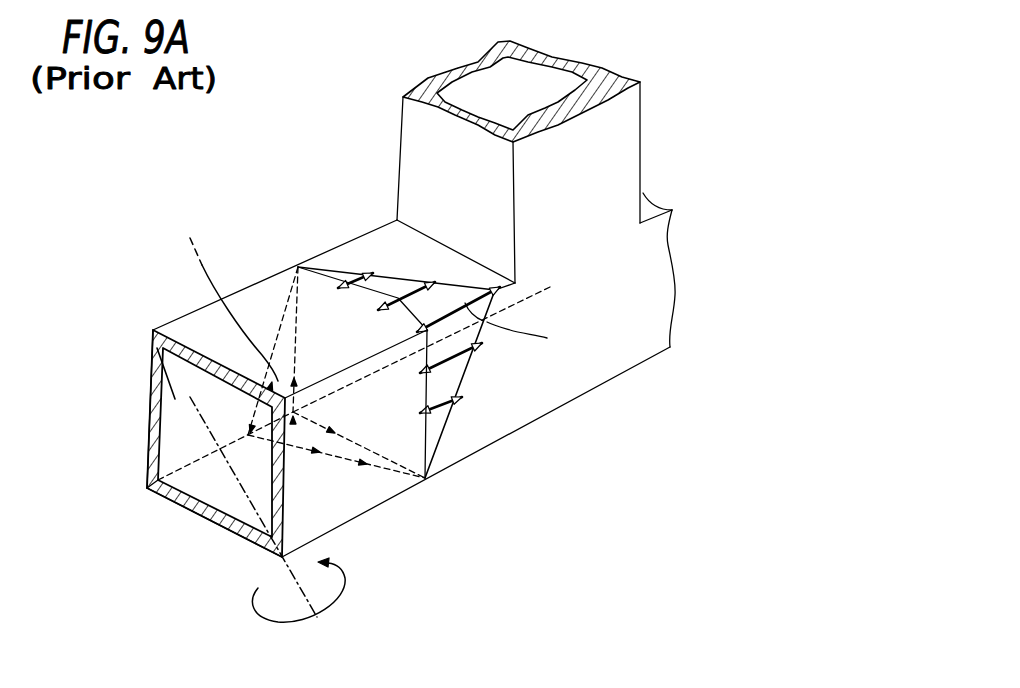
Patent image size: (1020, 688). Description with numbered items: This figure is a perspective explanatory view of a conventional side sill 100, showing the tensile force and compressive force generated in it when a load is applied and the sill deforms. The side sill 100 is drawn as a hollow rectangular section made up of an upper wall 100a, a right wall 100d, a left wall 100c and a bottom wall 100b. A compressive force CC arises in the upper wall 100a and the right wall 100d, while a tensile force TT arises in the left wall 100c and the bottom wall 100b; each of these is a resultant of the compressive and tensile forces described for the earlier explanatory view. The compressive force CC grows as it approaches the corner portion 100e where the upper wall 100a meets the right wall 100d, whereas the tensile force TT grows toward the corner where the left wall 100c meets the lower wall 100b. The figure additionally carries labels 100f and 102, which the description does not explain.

The side sill 100 is at (593, 393).
The upper wall 100a is at (252, 305).
The bottom wall 100b is at (213, 494).
The left wall 100c is at (152, 363).
The right wall 100d is at (345, 497).
The corner portion 100e is at (353, 364).
The bottom left corner edge 100f is at (147, 490).
The support block 102 is at (641, 137).